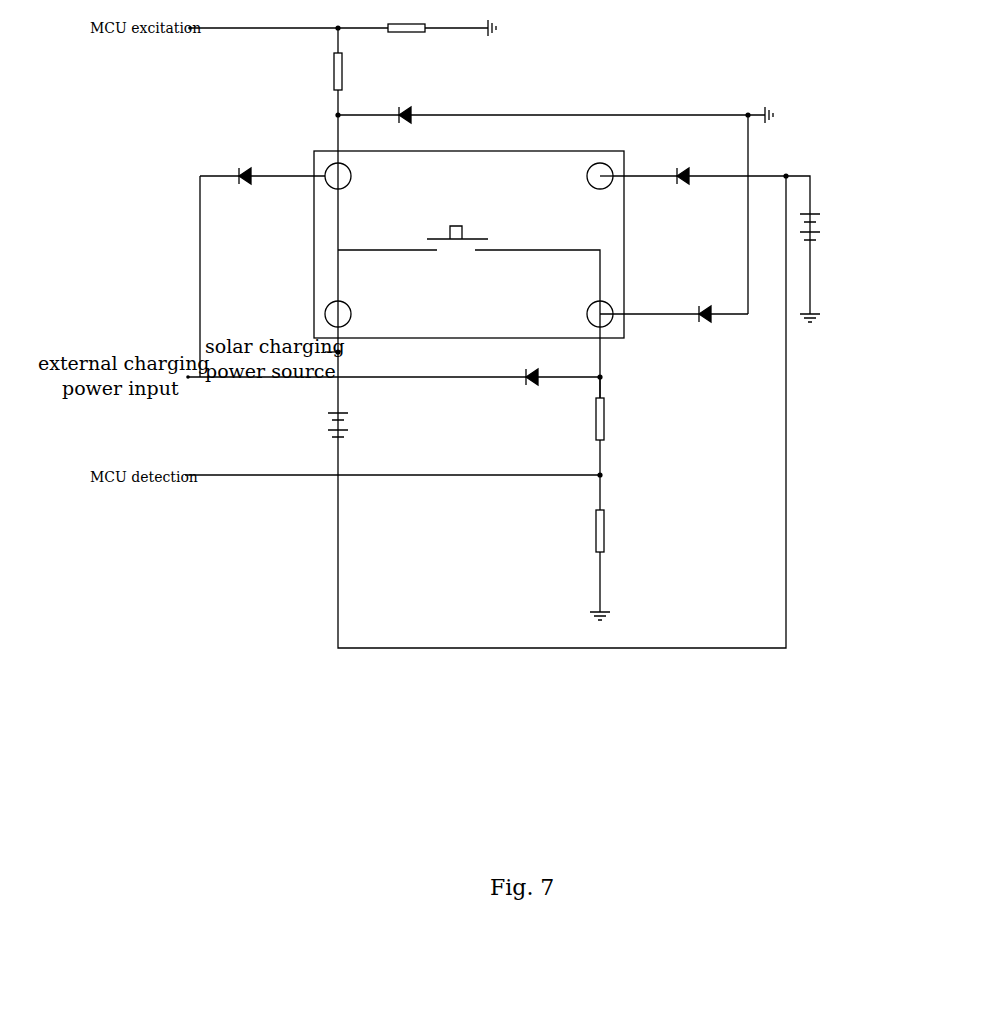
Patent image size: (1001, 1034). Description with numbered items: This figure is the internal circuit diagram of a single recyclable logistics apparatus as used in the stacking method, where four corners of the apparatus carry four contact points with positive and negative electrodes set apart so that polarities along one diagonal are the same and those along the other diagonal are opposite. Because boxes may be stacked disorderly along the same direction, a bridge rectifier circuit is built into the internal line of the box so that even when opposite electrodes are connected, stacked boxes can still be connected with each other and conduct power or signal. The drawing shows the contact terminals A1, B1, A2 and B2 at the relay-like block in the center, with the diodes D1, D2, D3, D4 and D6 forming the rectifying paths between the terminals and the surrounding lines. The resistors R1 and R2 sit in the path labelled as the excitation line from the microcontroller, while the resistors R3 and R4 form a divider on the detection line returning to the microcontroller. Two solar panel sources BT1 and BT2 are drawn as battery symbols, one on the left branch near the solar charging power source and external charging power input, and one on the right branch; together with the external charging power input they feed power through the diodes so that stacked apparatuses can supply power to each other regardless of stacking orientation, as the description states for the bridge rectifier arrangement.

The relay terminal A1 is at (344, 176).
The relay terminal B1 is at (593, 176).
The relay terminal A2 is at (593, 314).
The relay terminal B2 is at (344, 314).
The resistor R1 is at (350, 71).
The resistor R2 is at (406, 29).
The resistor R3 is at (612, 419).
The resistor R4 is at (612, 531).
The diode D1 is at (241, 176).
The diode D2 is at (401, 115).
The diode D3 is at (528, 377).
The diode D4 is at (701, 314).
The diode D6 is at (679, 178).
The solar panel BT1 is at (397, 430).
The solar panel BT2 is at (871, 231).